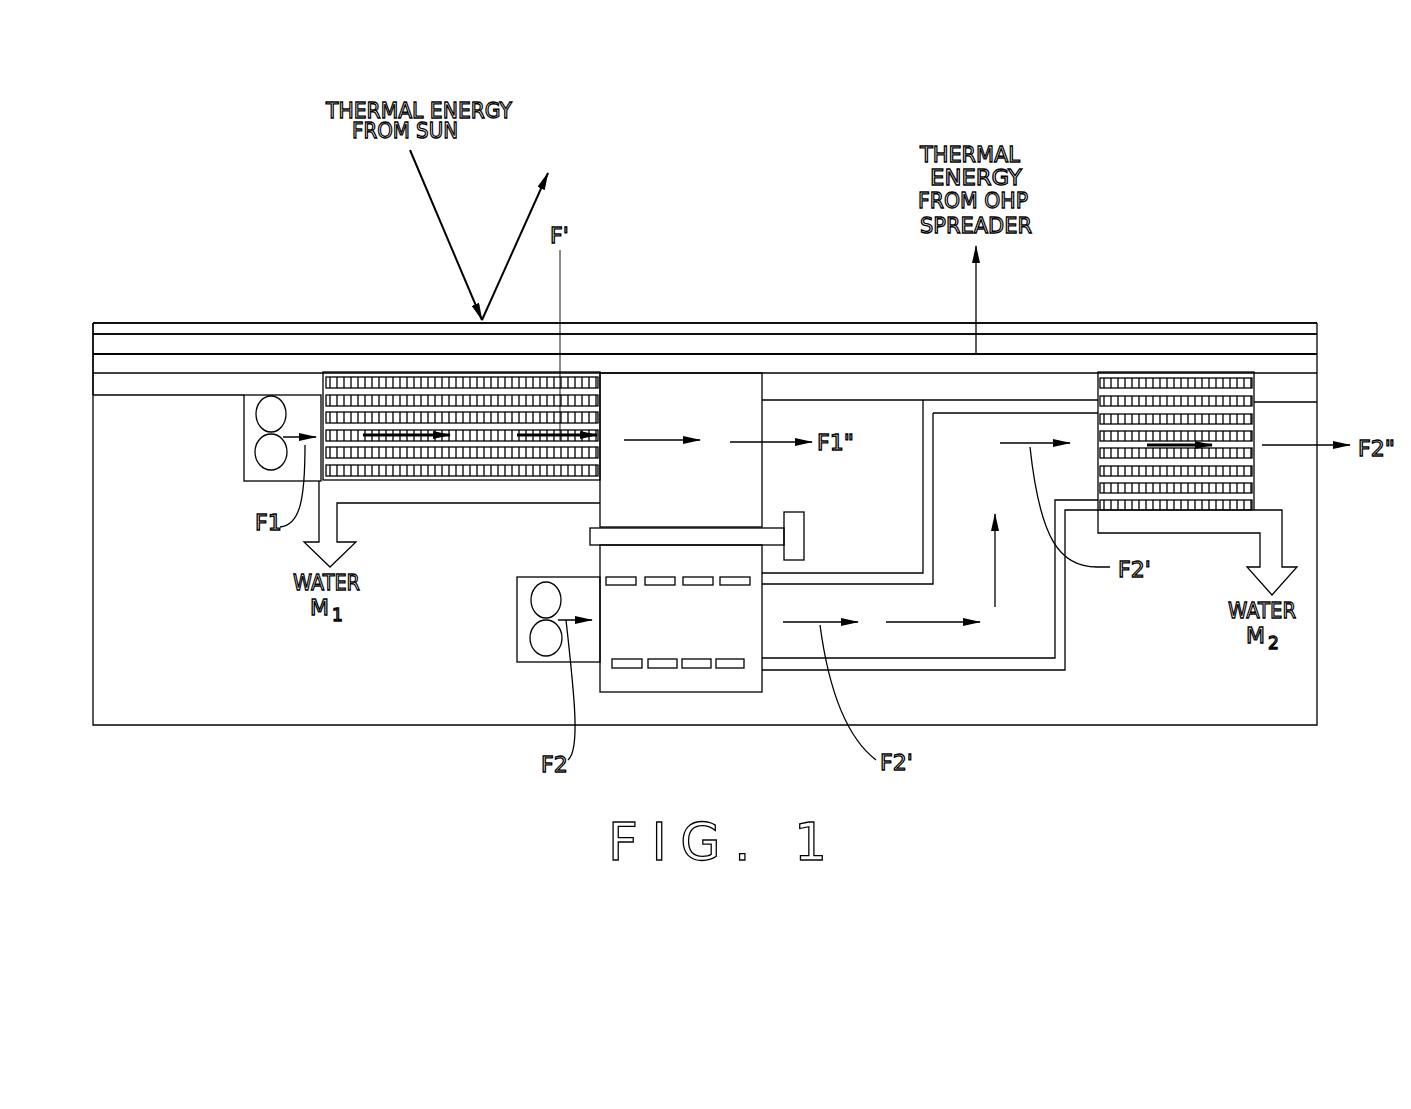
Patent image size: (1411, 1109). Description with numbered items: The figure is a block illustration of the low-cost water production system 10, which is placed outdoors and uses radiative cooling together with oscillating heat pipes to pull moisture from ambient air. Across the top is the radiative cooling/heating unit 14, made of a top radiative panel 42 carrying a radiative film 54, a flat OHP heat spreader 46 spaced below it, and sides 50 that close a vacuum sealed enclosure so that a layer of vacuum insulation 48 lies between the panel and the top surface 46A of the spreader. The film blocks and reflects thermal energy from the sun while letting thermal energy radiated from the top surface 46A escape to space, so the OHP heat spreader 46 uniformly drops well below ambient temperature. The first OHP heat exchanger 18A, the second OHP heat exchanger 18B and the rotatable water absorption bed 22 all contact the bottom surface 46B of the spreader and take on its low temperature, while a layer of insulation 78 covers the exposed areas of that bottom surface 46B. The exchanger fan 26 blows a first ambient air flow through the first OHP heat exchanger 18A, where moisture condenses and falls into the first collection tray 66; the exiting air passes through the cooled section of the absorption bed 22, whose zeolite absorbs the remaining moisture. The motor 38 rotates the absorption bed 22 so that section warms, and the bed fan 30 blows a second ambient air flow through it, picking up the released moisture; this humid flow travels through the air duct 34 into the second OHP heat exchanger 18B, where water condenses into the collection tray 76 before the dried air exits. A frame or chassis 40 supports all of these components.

The low-cost water production system 10 is at (838, 188).
The radiative cooling/heating unit 14 is at (1320, 372).
The first OHP heat exchanger 18A is at (391, 371).
The second OHP heat exchanger 18B is at (1257, 471).
The rotatable water absorption bed 22 is at (768, 420).
The exchanger fan 26 is at (244, 468).
The bed fan 30 is at (517, 648).
The air duct 34 is at (1066, 640).
The motor 38 is at (806, 536).
The frame or chassis 40 is at (93, 596).
The top radiative panel 42 is at (583, 321).
The flat OHP heat spreader 46 is at (640, 352).
The top surface of the OHP heat spreader 46A is at (255, 352).
The bottom surface of the OHP heat spreader 46B is at (168, 373).
The layer of vacuum insulation 48 is at (1150, 348).
The sides 50 is at (93, 346).
The radiative film 54 is at (143, 330).
The first collection tray 66 is at (440, 504).
The collection tray 76 is at (1182, 533).
The layer of insulation 78 is at (208, 392).